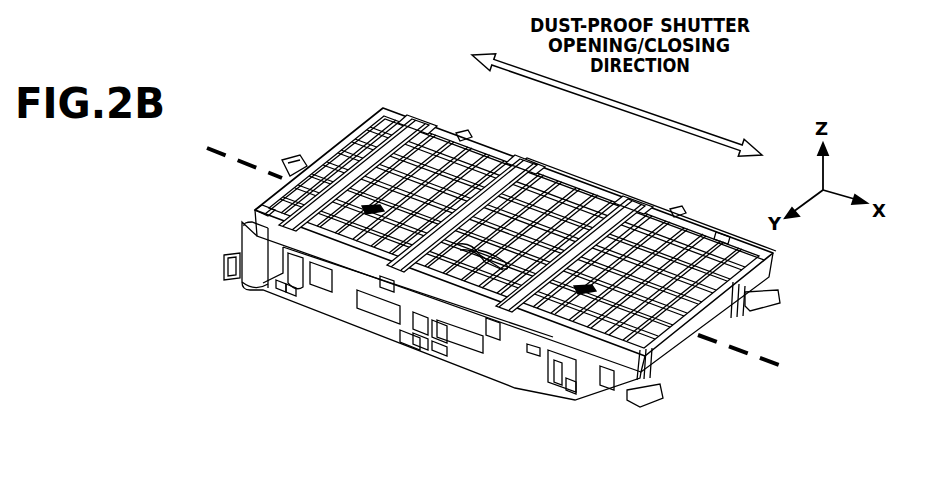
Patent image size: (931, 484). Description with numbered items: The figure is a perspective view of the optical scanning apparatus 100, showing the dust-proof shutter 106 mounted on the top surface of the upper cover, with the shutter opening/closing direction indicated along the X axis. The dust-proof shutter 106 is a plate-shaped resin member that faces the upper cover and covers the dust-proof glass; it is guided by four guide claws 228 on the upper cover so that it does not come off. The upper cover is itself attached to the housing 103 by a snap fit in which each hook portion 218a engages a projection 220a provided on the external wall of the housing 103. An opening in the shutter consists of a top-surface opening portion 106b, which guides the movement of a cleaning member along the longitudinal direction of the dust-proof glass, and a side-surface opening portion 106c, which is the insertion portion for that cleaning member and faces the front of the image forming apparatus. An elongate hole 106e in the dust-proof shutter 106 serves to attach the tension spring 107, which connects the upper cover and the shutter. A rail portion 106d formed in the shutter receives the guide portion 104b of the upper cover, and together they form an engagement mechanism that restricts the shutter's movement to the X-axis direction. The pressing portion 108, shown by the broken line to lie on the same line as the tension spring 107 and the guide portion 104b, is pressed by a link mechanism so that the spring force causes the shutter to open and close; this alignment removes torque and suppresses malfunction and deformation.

The optical scanning apparatus 100 is at (296, 114).
The housing 103 is at (403, 323).
The guide portion 104b is at (373, 208).
The dust-proof shutter 106 is at (677, 337).
The top-surface opening portion 106b is at (367, 152).
The side-surface opening portion 106c is at (265, 233).
The rail portion 106d is at (265, 191).
The elongate hole 106e is at (427, 283).
The tension spring 107 is at (410, 340).
The pressing portion 108 is at (285, 165).
The hook portion 218a is at (280, 285).
The projection 220a is at (290, 288).
The guide claw 228 is at (463, 137).